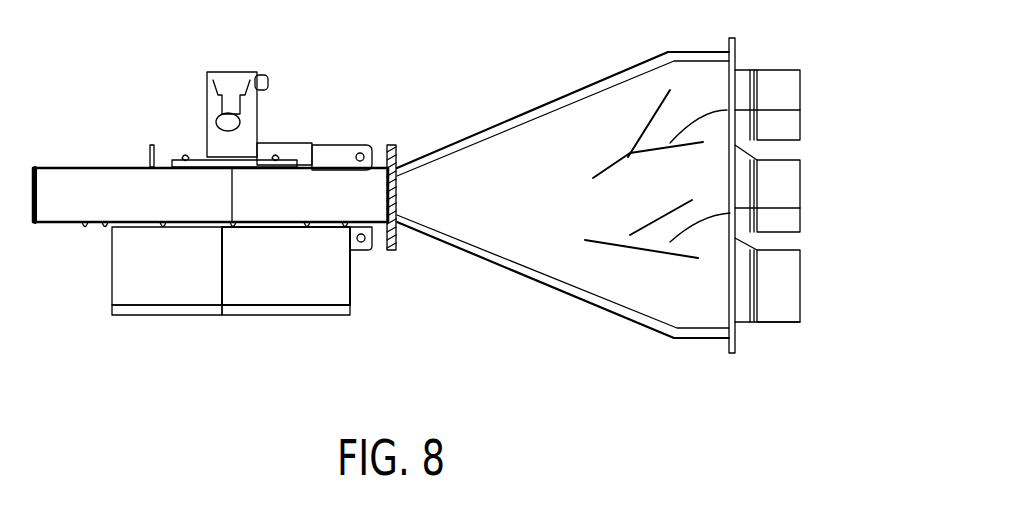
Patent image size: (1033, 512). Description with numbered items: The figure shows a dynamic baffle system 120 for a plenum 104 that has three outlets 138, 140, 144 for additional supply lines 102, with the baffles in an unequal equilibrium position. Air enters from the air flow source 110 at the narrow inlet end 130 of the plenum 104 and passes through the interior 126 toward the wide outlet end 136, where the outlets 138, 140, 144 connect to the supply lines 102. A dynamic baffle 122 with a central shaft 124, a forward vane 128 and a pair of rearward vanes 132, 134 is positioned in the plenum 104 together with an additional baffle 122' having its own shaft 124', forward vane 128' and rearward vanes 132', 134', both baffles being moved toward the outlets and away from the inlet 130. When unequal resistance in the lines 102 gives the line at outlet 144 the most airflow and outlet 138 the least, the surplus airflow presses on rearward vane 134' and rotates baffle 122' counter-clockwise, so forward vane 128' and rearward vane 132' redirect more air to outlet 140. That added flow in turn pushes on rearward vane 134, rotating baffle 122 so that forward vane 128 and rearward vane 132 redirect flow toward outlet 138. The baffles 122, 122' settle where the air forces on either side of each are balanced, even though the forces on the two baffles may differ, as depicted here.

The air flow source 110 is at (118, 150).
The plenum 104 is at (450, 136).
The narrow inlet end 130 is at (398, 160).
The dynamic baffle system 120 is at (524, 302).
The interior 126 is at (460, 226).
The dynamic baffle 122 is at (645, 83).
The central shaft 124 is at (643, 110).
The forward vane 128 is at (576, 88).
The rearward vane 132 is at (691, 74).
The additional baffle 122' is at (661, 299).
The shaft 124' is at (610, 232).
The forward vane 128' is at (596, 298).
The rearward vane 132' is at (634, 208).
The outlet 138 is at (745, 73).
The wide outlet end 136 is at (722, 318).
The outlet 144 is at (745, 320).
The supply line 102 is at (784, 73).
The rearward vane 134 is at (795, 110).
The rearward vane 134' is at (798, 208).
The outlet 140 is at (745, 187).